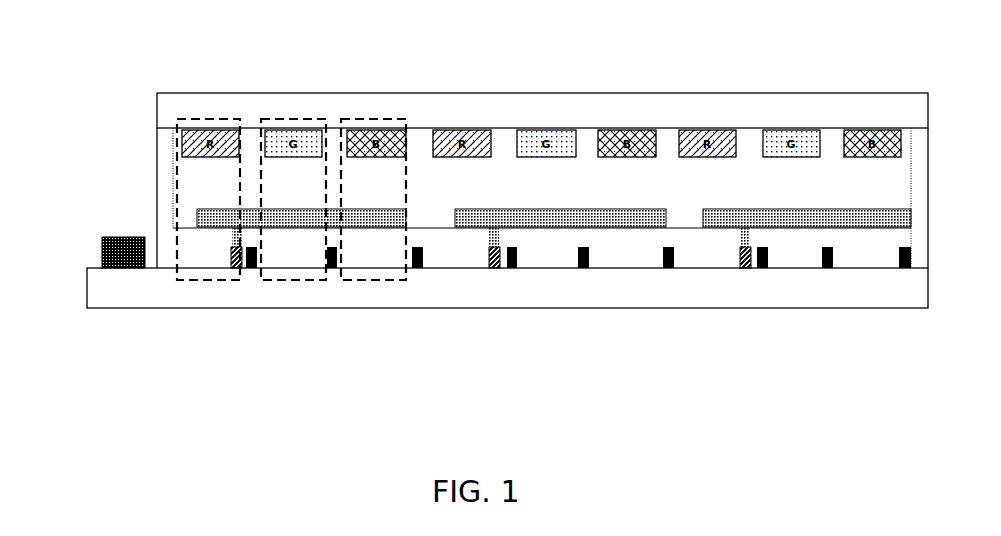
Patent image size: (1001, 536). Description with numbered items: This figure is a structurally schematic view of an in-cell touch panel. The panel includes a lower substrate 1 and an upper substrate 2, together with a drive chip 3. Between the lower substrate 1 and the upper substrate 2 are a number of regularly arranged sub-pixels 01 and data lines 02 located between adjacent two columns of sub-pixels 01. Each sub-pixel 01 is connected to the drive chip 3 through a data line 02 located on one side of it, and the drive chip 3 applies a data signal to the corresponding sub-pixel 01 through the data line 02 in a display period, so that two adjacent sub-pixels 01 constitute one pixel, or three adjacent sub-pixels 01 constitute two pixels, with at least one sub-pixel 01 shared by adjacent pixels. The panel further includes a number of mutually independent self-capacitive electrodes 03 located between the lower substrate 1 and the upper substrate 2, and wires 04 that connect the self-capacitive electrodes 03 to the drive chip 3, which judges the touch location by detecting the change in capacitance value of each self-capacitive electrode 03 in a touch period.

The lower substrate 1 is at (507, 328).
The upper substrate 2 is at (542, 74).
The drive chip 3 is at (87, 310).
The sub-pixel 01 is at (271, 148).
The data line 02 is at (578, 315).
The self-capacitive electrode 03 is at (554, 299).
The wire 04 is at (491, 305).